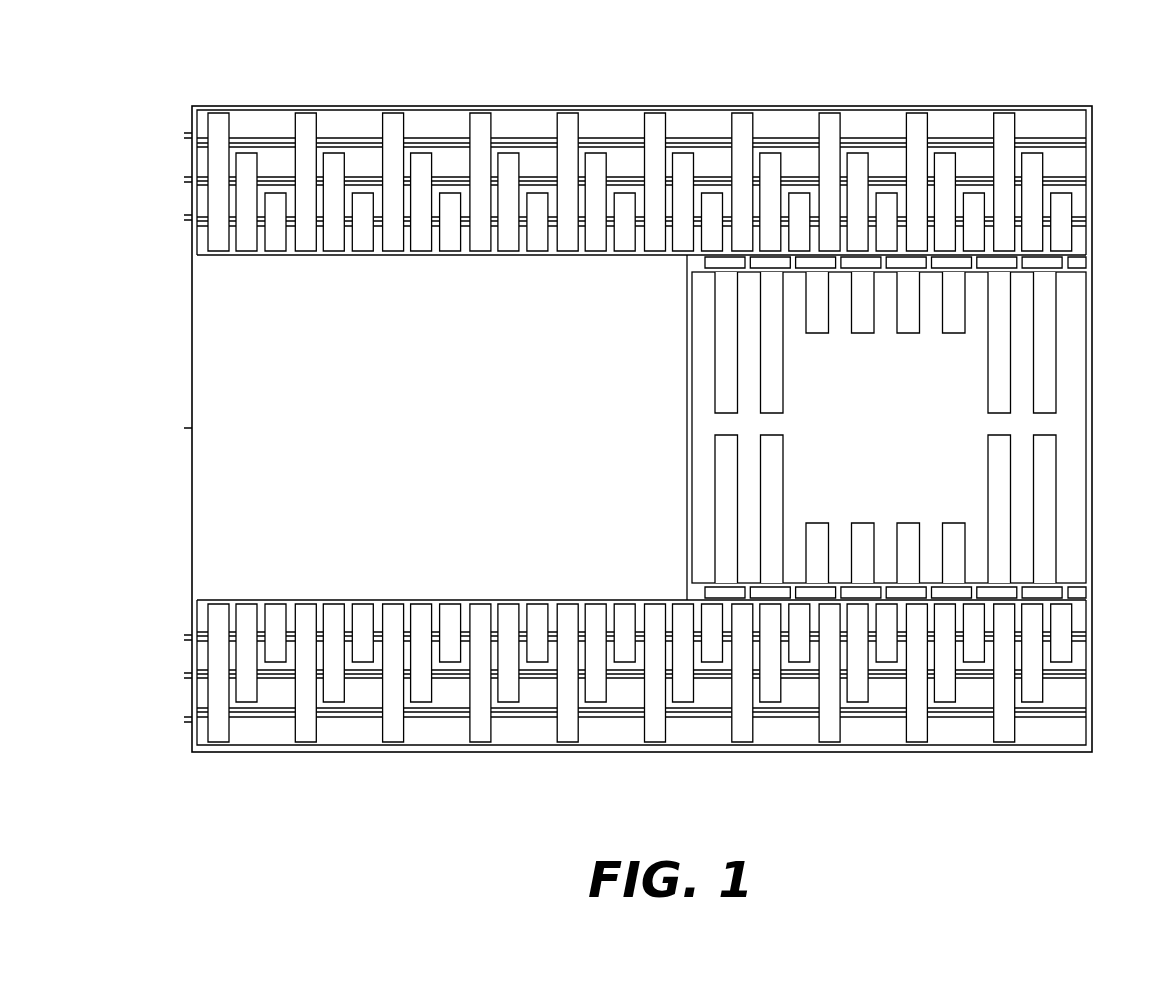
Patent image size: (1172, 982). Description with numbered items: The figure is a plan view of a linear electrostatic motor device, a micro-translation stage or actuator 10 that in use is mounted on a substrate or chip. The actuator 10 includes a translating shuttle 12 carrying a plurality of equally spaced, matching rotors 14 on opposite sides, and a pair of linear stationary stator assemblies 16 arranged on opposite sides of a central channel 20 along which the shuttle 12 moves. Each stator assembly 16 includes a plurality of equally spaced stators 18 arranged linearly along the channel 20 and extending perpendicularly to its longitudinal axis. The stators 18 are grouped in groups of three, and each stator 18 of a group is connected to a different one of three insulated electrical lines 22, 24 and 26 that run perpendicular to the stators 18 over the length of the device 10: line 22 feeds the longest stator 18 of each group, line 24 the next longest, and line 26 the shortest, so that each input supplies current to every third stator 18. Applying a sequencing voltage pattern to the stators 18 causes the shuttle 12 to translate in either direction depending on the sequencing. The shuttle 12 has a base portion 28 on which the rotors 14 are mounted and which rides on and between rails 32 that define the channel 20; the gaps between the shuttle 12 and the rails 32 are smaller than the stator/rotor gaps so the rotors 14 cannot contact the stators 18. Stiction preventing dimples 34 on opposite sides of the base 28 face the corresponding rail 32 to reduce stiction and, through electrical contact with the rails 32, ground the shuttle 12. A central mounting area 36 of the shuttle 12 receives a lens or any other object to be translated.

The translation stage or actuator 10 is at (632, 423).
The translating shuttle 12 is at (881, 447).
The rotors 14 is at (792, 322).
The linear stationary stator assemblies 16 is at (953, 105).
The stators 18 is at (626, 192).
The central channel 20 is at (248, 499).
The electrical line 22 is at (253, 128).
The electrical line 24 is at (192, 178).
The electrical line 26 is at (192, 220).
The base portion 28 is at (687, 462).
The rails 32 is at (322, 258).
The stiction preventing projections or dimples 34 is at (700, 262).
The central mounting area 36 is at (881, 427).